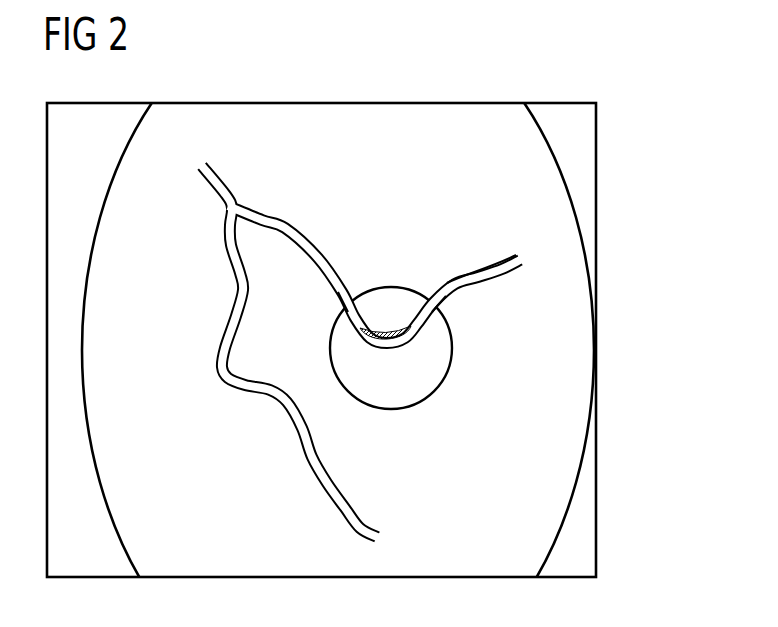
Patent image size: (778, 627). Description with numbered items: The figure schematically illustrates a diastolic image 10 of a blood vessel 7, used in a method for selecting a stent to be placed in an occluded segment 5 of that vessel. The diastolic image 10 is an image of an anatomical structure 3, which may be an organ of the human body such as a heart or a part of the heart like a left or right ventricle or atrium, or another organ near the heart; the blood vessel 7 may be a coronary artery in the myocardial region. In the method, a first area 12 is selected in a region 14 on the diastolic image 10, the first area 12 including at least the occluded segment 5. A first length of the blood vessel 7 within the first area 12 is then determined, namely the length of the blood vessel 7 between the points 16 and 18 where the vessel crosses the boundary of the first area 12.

The anatomical structure 3 is at (533, 482).
The occluded segment 5 is at (388, 330).
The blood vessel 7 is at (295, 222).
The diastolic image 10 is at (596, 107).
The first area 12 is at (452, 365).
The region 14 is at (442, 272).
The point 16 is at (339, 313).
The point 18 is at (442, 302).